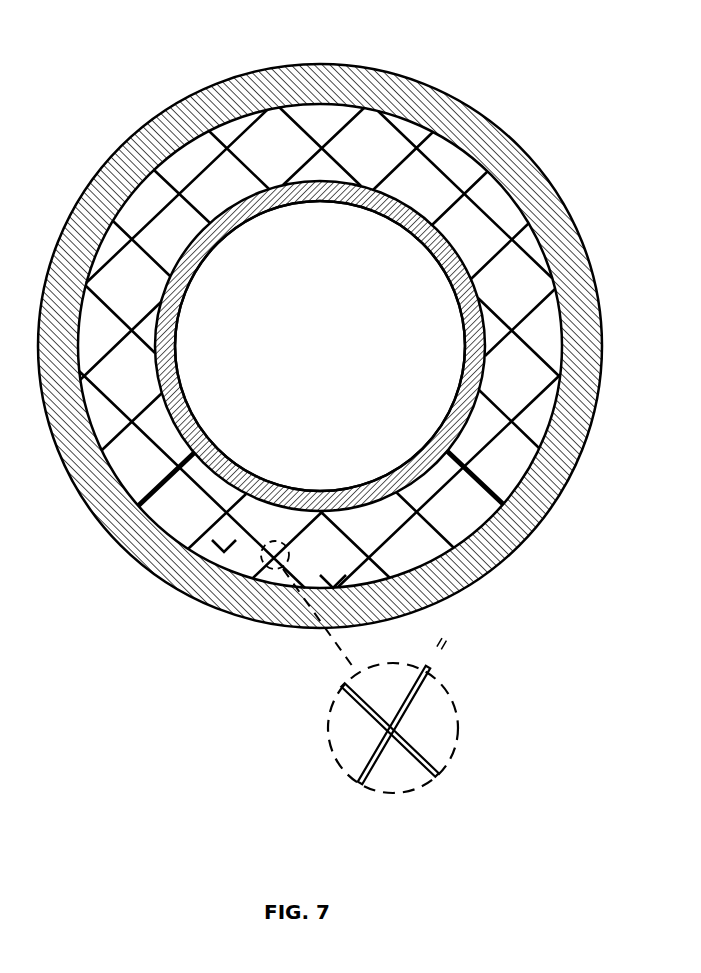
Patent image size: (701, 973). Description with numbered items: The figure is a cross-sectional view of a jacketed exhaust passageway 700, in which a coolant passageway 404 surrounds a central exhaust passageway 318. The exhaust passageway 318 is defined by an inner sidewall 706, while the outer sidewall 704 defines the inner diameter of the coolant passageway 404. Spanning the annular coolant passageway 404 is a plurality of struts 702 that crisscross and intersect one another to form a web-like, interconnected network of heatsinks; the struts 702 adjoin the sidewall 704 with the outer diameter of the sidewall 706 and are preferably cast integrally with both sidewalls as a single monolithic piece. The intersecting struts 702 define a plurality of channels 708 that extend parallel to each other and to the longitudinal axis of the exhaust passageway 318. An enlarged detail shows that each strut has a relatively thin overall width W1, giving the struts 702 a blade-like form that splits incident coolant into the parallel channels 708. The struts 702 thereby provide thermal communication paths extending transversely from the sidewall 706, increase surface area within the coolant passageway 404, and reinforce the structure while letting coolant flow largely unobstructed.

The jacketed exhaust passageway 700 is at (169, 88).
The struts 702 is at (447, 542).
The sidewall 704 is at (333, 588).
The sidewall 706 is at (268, 207).
The channels 708 is at (130, 474).
The exhaust passageway 318 is at (342, 462).
The coolant passageway 404 is at (223, 553).
The overall width W1 is at (403, 647).